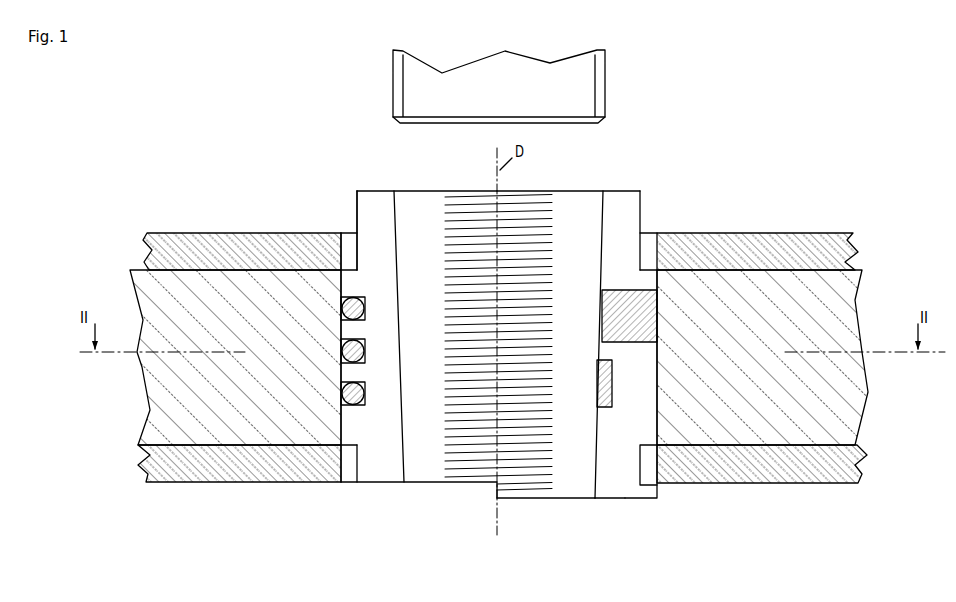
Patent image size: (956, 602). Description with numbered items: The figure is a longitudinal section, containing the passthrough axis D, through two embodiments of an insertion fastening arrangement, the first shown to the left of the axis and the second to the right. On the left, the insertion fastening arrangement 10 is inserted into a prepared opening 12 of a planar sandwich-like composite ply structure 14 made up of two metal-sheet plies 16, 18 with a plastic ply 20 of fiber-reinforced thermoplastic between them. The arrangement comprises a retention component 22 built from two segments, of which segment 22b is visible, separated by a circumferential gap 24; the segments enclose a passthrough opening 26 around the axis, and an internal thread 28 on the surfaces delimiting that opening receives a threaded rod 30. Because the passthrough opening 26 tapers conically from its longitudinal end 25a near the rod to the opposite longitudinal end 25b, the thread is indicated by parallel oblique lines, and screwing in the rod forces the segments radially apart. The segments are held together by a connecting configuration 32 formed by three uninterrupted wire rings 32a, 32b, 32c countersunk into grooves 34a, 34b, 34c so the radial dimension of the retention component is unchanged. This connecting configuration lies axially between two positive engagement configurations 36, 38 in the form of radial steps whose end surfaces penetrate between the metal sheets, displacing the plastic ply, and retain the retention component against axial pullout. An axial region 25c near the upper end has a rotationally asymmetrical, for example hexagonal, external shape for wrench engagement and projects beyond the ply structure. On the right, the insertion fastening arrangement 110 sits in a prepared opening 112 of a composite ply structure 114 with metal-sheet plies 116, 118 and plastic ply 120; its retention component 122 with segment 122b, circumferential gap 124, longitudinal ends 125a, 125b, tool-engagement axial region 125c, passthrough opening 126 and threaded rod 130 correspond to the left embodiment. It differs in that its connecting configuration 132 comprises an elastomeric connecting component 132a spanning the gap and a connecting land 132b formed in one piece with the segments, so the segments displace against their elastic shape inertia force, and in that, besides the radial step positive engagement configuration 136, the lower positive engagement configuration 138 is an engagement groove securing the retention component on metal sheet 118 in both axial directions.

The insertion fastening arrangement 10 is at (326, 302).
The prepared opening 12 is at (343, 487).
The composite ply structure 14 is at (228, 337).
The metal-sheet ply 16 is at (143, 248).
The metal-sheet ply 18 is at (143, 458).
The plastic ply 20 is at (148, 418).
The retention component 22 is at (413, 335).
The segment 22b is at (330, 221).
The circumferential gap 24 is at (380, 461).
The longitudinal end 25a is at (471, 180).
The longitudinal end 25b is at (430, 497).
The axial region 25c is at (348, 214).
The passthrough opening 26 is at (428, 207).
The internal thread 28 is at (462, 212).
The threaded rod 30 is at (534, 86).
The threaded rod 130 is at (582, 91).
The connecting configuration 32 is at (386, 329).
The wire ring 32a is at (358, 308).
The wire ring 32b is at (358, 352).
The wire ring 32c is at (358, 394).
The groove 34a is at (363, 321).
The groove 34b is at (364, 364).
The groove 34c is at (363, 406).
The positive engagement configuration 36 is at (362, 270).
The positive engagement configuration 38 is at (361, 447).
The insertion fastening arrangement 110 is at (704, 330).
The prepared opening 112 is at (598, 522).
The composite ply structure 114 is at (776, 327).
The metal-sheet ply 116 is at (851, 250).
The metal-sheet ply 118 is at (856, 458).
The plastic ply 120 is at (858, 418).
The retention component 122 is at (643, 346).
The segment 122b is at (713, 204).
The circumferential gap 124 is at (623, 497).
The longitudinal end 125a is at (580, 184).
The longitudinal end 125b is at (542, 515).
The axial region 125c is at (655, 202).
The passthrough opening 126 is at (562, 207).
The connecting configuration 132 is at (606, 336).
The elastomeric connecting component 132a is at (607, 302).
The connecting land 132b is at (601, 389).
The positive engagement configuration 136 is at (637, 269).
The positive engagement configuration 138 is at (636, 467).